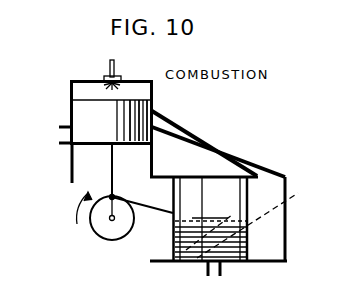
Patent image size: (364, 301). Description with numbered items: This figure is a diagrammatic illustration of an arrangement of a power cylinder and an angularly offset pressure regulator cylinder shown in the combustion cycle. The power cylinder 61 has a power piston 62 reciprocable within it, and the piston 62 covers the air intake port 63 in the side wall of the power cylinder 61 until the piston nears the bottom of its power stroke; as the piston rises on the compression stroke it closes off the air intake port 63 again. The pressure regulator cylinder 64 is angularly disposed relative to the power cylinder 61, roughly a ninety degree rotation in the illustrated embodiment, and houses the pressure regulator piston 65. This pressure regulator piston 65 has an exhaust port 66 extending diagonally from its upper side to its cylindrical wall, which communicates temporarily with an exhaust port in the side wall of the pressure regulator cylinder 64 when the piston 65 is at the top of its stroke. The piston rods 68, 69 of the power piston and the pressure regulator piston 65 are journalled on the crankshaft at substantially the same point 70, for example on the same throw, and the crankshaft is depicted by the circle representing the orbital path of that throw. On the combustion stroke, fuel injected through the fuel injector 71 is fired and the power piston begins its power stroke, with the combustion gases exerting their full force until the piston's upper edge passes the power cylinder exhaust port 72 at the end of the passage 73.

The power cylinder 61 is at (71, 100).
The power piston 62 is at (82, 117).
The air intake port 63 is at (68, 146).
The pressure regulator cylinder 64 is at (182, 270).
The pressure regulator piston 65 is at (172, 224).
The exhaust port 66 is at (254, 221).
The piston rod 68 is at (113, 168).
The piston rod 69 is at (134, 203).
The crankshaft journal point 70 is at (107, 207).
The fuel injector 71 is at (109, 66).
The power cylinder exhaust port 72 is at (157, 116).
The passage 73 is at (203, 131).